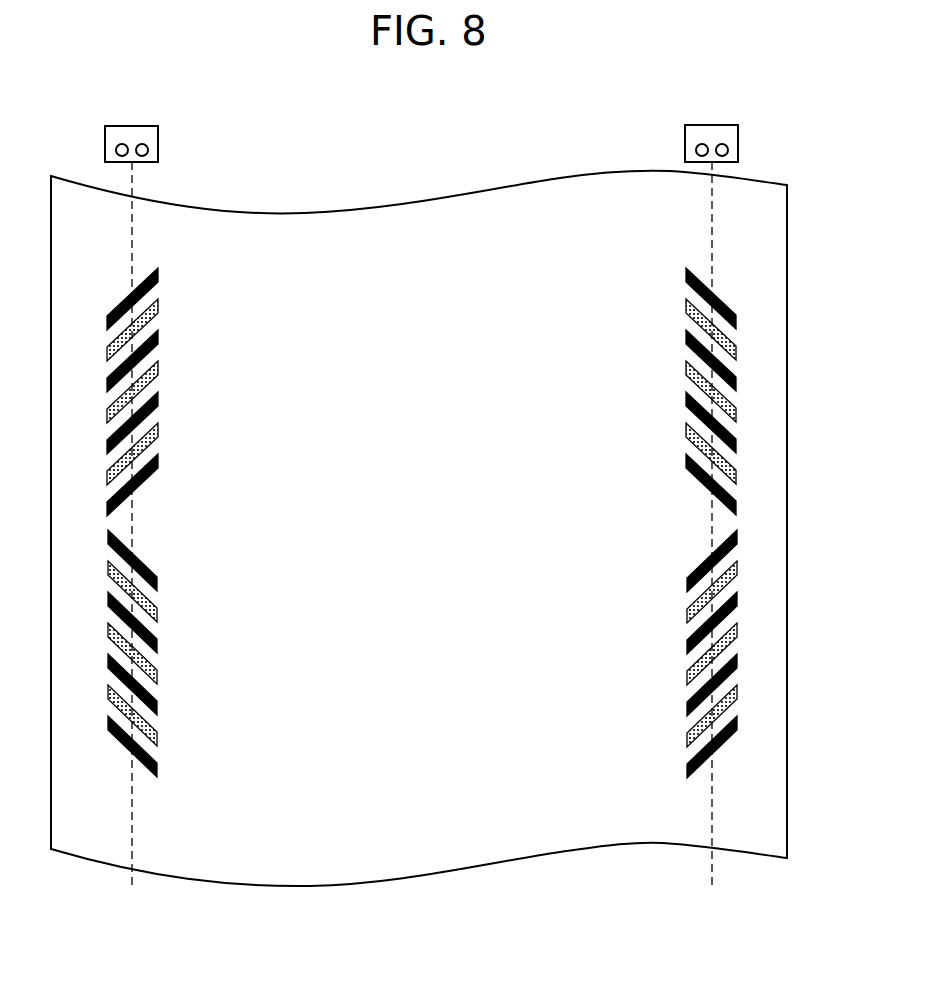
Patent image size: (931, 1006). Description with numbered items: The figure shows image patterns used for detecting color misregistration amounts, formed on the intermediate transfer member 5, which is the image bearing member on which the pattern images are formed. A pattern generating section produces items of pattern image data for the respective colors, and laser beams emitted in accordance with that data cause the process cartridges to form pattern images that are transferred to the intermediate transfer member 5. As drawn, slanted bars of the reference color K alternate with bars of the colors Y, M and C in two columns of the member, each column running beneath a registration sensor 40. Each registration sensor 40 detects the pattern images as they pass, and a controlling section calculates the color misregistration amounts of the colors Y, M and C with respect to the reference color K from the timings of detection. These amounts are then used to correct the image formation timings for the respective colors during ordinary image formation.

The intermediate transfer member 5 is at (777, 370).
The registration sensor 40 is at (152, 135).
The black pattern image K is at (108, 323).
The yellow pattern image Y is at (157, 303).
The magenta pattern image M is at (157, 367).
The cyan pattern image C is at (157, 428).